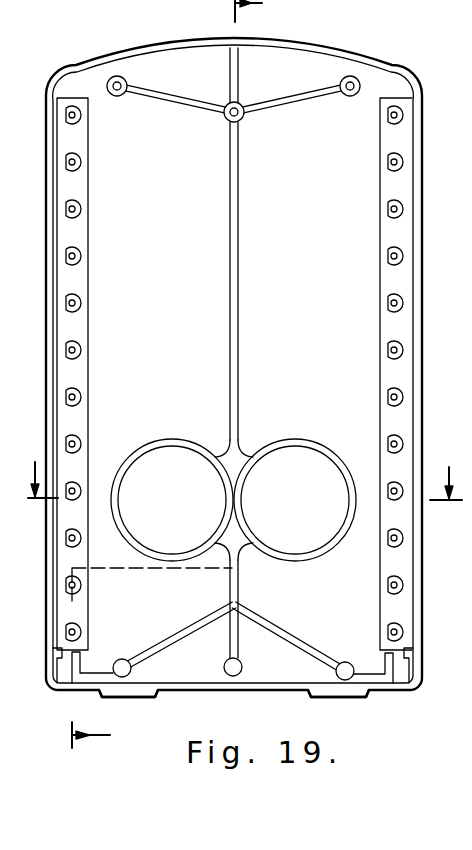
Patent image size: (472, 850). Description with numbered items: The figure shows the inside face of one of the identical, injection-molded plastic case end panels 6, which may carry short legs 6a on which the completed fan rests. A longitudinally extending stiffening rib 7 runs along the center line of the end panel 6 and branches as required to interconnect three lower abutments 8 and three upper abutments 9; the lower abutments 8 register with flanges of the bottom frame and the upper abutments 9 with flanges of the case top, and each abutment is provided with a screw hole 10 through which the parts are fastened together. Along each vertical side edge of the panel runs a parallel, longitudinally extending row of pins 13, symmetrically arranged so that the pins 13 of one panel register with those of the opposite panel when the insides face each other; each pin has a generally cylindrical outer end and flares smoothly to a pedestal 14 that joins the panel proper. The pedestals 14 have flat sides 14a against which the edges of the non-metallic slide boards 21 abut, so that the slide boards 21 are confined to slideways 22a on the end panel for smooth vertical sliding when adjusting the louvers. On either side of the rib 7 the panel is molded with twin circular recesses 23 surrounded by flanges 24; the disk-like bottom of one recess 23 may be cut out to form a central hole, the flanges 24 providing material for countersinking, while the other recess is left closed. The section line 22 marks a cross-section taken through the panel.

The end panel 6 is at (297, 241).
The short legs 6a is at (148, 698).
The stiffening rib 7 is at (240, 355).
The lower abutments 8 is at (124, 660).
The upper abutments 9 is at (127, 82).
The screw holes 10 is at (119, 97).
The pins 13 is at (80, 346).
The pedestals 14 is at (80, 440).
The flat sides 14a is at (80, 250).
The slide boards 21 is at (186, 374).
The section line 22- 22 is at (243, 472).
The slideways 22a is at (88, 282).
The circular recesses 23 is at (180, 509).
The flanges 24 is at (170, 440).